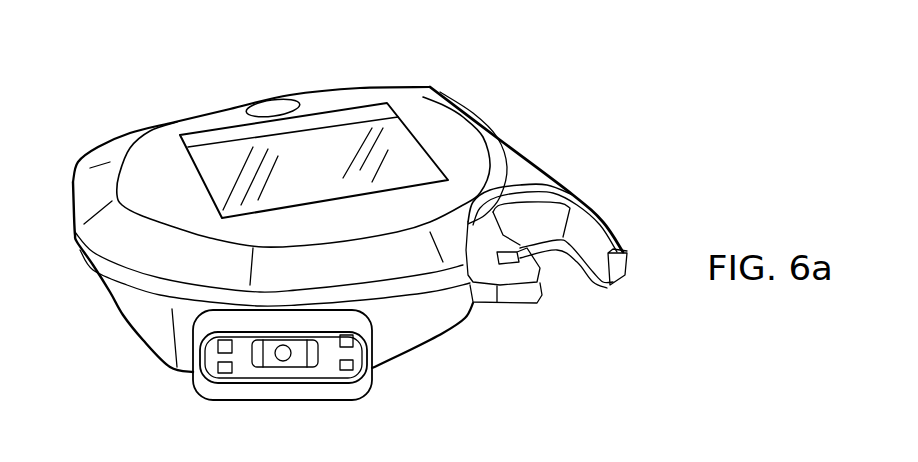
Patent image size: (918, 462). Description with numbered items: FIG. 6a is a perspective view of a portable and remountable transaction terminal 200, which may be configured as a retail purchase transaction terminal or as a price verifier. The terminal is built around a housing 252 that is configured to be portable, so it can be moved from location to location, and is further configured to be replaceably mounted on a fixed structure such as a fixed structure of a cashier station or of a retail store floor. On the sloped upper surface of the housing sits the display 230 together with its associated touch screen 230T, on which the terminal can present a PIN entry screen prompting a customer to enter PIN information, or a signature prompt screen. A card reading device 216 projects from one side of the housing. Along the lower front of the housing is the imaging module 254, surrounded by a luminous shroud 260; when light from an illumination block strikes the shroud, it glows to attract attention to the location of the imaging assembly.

The terminal 200 is at (575, 157).
The card reading device 216 is at (572, 290).
The display 230 is at (415, 117).
The touch screen 230T is at (350, 94).
The housing 252 is at (418, 340).
The imaging module 254 is at (307, 380).
The luminous shroud 260 is at (235, 387).